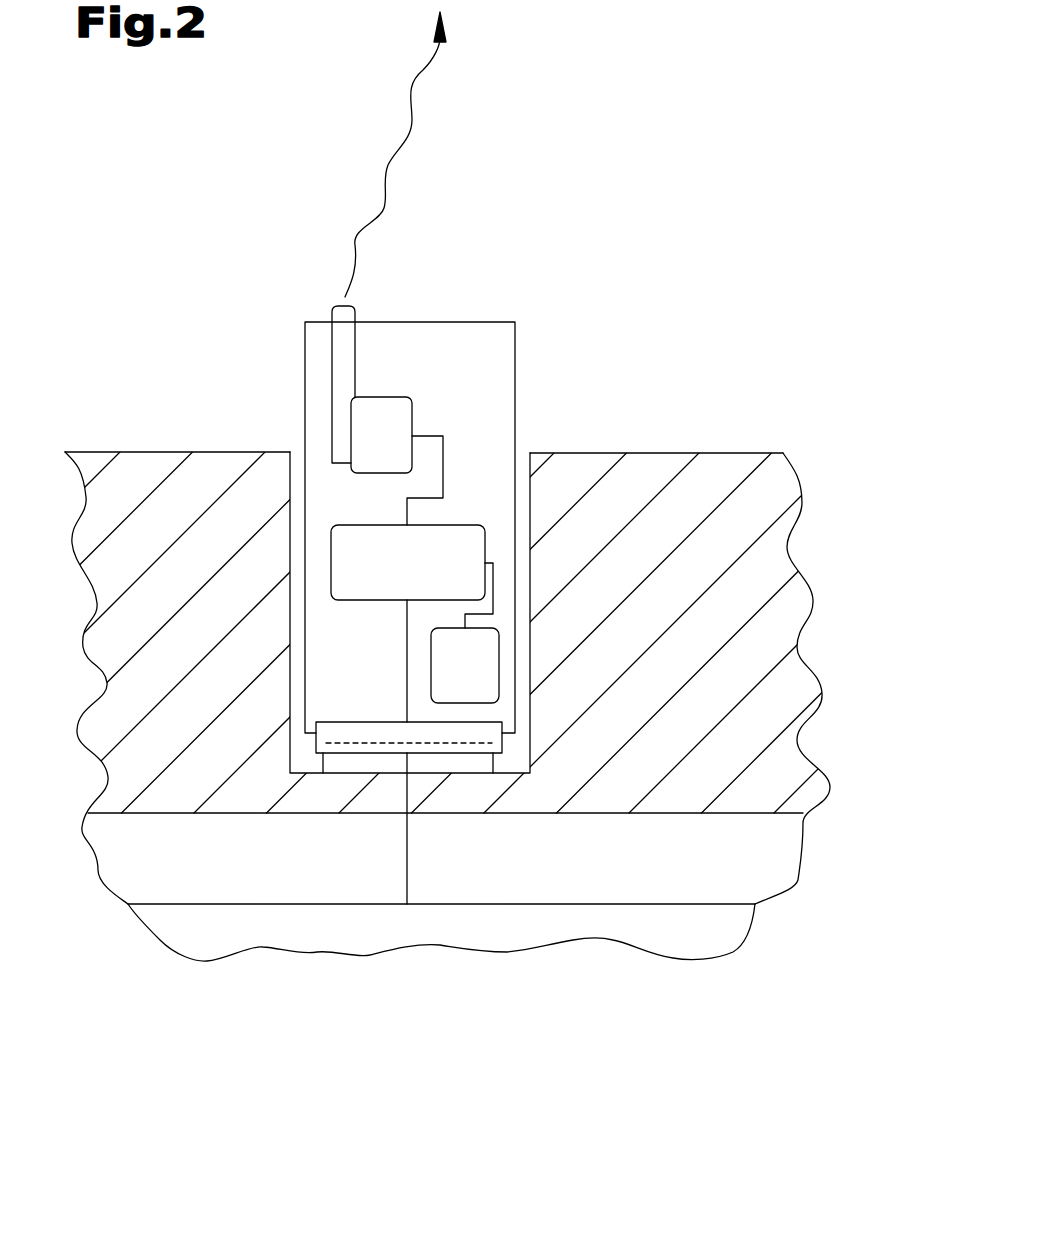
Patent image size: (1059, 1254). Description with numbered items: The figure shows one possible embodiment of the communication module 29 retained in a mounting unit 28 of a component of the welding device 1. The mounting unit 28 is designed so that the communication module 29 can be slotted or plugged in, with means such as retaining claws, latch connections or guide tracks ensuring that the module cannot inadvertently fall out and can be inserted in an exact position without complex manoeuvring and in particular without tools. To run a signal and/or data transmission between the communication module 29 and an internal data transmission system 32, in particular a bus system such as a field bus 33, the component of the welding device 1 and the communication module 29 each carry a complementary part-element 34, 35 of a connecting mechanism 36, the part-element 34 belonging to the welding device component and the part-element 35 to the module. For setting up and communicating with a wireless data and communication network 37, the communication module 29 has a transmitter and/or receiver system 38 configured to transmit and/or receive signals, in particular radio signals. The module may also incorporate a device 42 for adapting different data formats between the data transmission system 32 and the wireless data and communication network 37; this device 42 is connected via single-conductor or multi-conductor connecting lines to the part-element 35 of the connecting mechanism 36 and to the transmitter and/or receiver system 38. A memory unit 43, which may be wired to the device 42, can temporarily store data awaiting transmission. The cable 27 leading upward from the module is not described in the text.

The welding device 1 is at (285, 966).
The connecting cable 27 is at (428, 172).
The mounting unit 28 is at (287, 444).
The communication module 29 is at (493, 390).
The internal data transmission system 32 is at (590, 915).
The field bus 33 is at (657, 905).
The part-element of the connecting mechanism 34 is at (368, 768).
The part-element of the connecting mechanism 35 is at (455, 730).
The connecting mechanism 36 is at (286, 770).
The wireless data and communication network 37 is at (390, 212).
The transmitter and/or receiver system 38 is at (420, 366).
The device for adapting different data formats 42 is at (435, 553).
The memory unit 43 is at (465, 673).